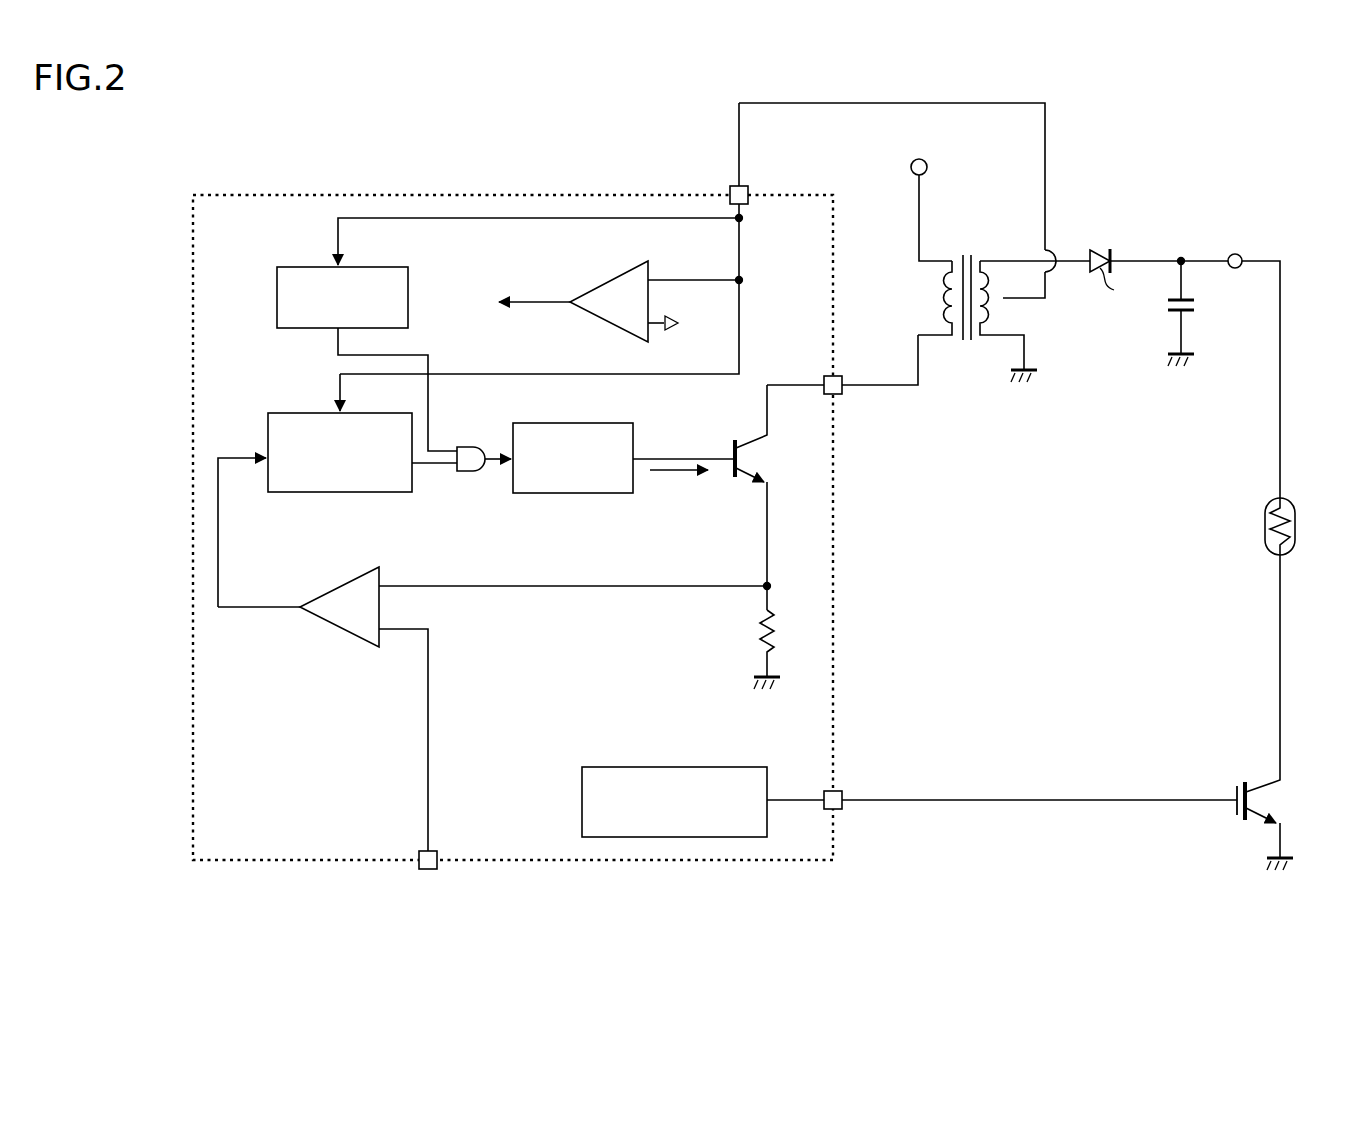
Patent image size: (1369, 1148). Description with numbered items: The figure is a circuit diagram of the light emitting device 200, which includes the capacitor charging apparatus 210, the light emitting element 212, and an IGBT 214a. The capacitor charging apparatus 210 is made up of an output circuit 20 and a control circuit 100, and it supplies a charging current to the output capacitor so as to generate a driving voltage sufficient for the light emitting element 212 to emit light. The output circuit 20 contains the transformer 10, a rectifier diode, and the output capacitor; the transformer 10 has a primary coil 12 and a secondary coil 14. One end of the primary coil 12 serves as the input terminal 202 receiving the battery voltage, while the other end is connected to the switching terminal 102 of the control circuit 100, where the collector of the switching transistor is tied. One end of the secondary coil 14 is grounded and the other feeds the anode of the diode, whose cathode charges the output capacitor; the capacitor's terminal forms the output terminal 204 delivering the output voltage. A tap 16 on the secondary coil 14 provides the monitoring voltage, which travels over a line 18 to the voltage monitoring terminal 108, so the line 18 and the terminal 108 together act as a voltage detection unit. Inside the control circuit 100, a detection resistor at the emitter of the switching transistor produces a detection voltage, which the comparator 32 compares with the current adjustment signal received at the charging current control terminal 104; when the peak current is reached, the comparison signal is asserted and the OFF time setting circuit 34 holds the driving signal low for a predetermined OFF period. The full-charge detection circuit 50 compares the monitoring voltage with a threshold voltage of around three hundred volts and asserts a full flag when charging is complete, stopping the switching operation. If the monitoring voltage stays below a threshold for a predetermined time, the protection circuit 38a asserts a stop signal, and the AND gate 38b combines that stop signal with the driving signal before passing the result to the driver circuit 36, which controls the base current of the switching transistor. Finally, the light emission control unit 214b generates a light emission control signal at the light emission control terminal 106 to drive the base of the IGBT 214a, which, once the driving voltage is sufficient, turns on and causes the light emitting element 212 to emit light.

The light emitting device 200 is at (752, 948).
The control circuit 100 is at (836, 445).
The line 18 is at (930, 103).
The voltage monitoring terminal 108 is at (731, 186).
The protection circuit 38a is at (277, 295).
The full-charge detection circuit 50 is at (600, 326).
The OFF time setting circuit 34 is at (338, 492).
The AND gate 38b is at (487, 435).
The driver circuit 36 is at (572, 493).
The comparator 32 is at (340, 628).
The charging current control terminal 104 is at (440, 868).
The switching terminal 102 is at (842, 378).
The input terminal 202 is at (911, 172).
The transformer 10 is at (977, 266).
The primary coil 12 is at (958, 252).
The secondary coil 14 is at (1005, 284).
The tap 16 is at (1010, 300).
The output terminal 204 is at (1240, 255).
The light emitting element 212 is at (1295, 523).
The IGBT 214a is at (1236, 810).
The light emission control unit 214b is at (705, 767).
The light emission control terminal 106 is at (842, 792).
The output circuit 20 is at (1222, 416).
The capacitor charging apparatus 210 is at (1087, 464).